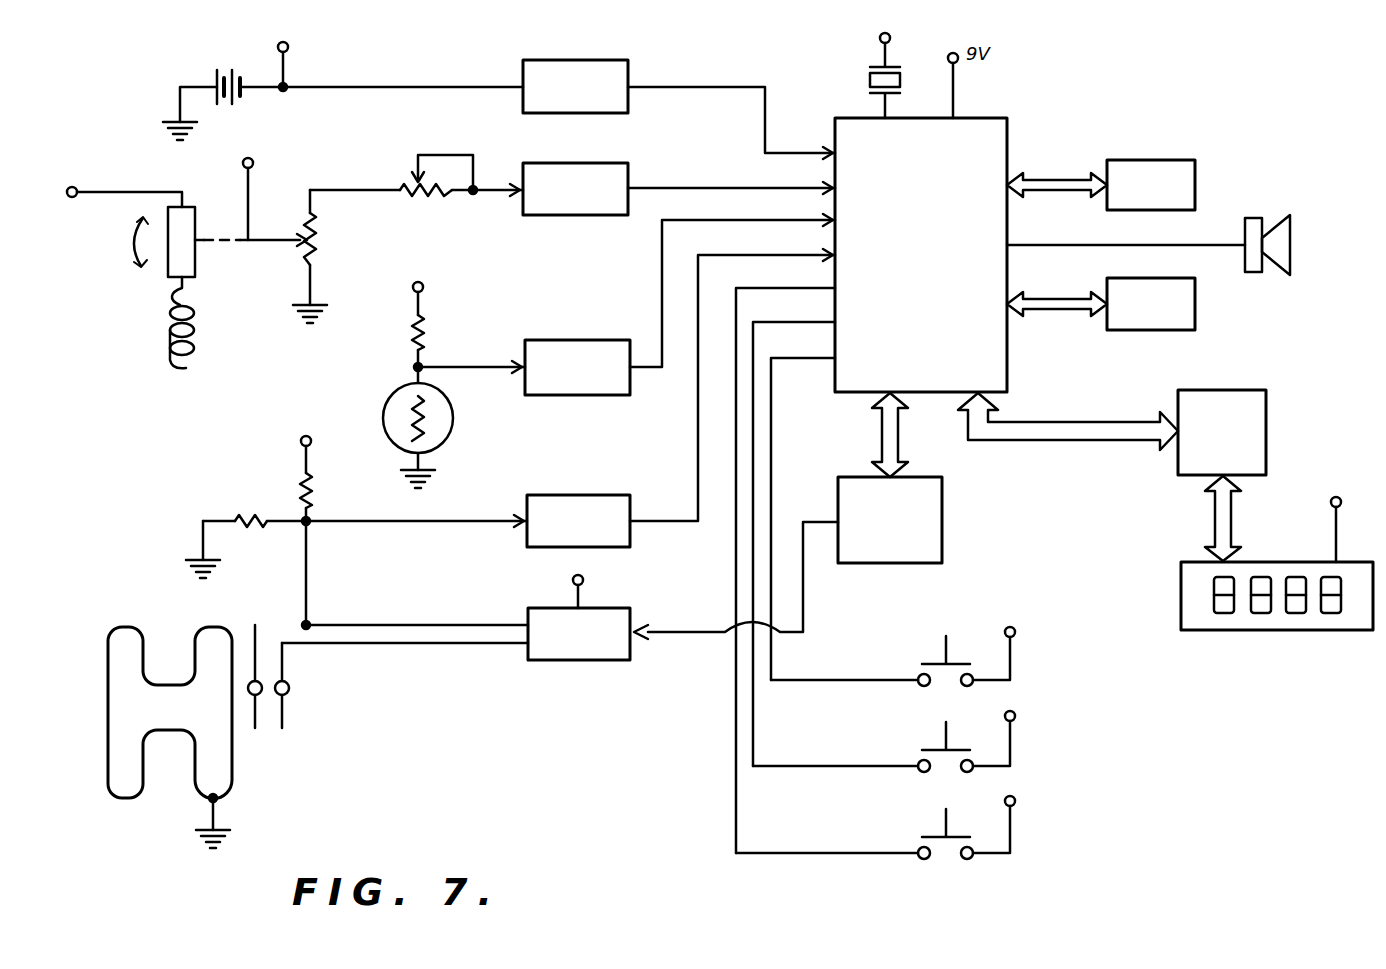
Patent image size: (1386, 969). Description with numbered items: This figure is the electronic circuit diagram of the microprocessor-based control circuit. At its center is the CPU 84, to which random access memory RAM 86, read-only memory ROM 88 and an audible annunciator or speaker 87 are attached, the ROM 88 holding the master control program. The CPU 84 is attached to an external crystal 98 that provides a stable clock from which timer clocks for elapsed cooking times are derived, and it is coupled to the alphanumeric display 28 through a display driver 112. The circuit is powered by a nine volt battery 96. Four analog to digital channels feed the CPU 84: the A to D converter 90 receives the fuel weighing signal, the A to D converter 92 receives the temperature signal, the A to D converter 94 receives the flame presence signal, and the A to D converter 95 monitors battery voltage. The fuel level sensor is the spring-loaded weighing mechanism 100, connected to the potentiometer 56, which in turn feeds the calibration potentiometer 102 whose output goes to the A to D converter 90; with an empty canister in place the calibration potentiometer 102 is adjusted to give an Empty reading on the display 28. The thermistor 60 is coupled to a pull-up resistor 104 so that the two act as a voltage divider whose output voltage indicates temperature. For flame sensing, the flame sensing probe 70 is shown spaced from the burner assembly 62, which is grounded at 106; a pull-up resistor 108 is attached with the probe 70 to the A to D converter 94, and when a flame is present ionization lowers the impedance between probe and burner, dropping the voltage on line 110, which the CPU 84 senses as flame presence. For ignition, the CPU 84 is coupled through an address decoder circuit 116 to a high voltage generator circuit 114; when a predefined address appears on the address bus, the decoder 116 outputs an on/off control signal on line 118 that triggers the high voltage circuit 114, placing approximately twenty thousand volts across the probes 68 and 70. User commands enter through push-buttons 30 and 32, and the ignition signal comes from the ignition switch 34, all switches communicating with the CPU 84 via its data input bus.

The alphanumeric display 28 is at (1283, 630).
The push-button 30 is at (920, 675).
The push-button 32 is at (920, 762).
The ignition switch 34 is at (920, 850).
The potentiometer 56 is at (322, 240).
The thermistor 60 is at (400, 412).
The burner assembly 62 is at (232, 770).
The probe 68 is at (282, 712).
The flame sensing probe 70 is at (255, 713).
The CPU 84 is at (905, 335).
The RAM 86 is at (1140, 160).
The speaker 87 is at (1253, 218).
The ROM 88 is at (1197, 304).
The A to D converter 90 is at (555, 163).
The A to D converter 92 is at (565, 340).
The A to D converter 94 is at (572, 495).
The A to D converter 95 is at (523, 67).
The battery 96 is at (222, 70).
The crystal 98 is at (868, 80).
The spring-loaded weighing mechanism 100 is at (156, 182).
The calibration potentiometer 102 is at (425, 190).
The resistor 104 is at (428, 337).
The ground 106 is at (215, 815).
The pull-up resistor 108 is at (302, 474).
The line 110 is at (412, 527).
The display driver 112 is at (1243, 390).
The high voltage generator circuit 114 is at (538, 608).
The address decoder circuit 116 is at (881, 565).
The line 118 is at (698, 640).